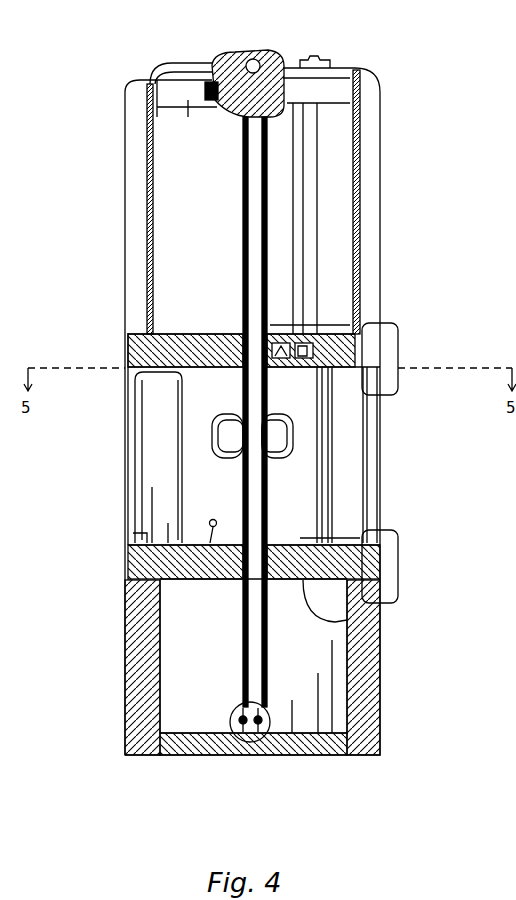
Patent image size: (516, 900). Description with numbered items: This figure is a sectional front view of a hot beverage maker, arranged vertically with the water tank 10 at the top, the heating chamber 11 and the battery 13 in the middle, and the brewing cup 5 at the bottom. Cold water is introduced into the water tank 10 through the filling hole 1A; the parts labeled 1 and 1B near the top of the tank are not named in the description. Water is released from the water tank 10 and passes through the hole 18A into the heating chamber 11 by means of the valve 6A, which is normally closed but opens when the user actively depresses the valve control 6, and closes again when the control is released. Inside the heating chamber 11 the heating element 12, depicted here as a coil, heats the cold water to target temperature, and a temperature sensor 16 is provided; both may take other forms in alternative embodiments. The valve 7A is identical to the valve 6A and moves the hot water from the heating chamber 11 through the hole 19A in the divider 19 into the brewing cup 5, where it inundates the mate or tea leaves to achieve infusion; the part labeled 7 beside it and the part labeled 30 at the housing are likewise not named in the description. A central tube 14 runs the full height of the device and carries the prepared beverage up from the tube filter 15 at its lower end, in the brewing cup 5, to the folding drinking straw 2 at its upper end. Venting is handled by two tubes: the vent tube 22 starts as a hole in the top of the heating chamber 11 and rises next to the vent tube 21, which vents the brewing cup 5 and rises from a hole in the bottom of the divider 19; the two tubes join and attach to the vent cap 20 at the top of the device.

The cap 1 is at (188, 63).
The filling hole 1A is at (190, 117).
The cap lower portion 1B is at (170, 330).
The folding drinking straw 2 is at (270, 53).
The brewing cup 5 is at (252, 667).
The valve control 6 is at (393, 345).
The valve 6A is at (372, 417).
The lower side fitting 7 is at (390, 548).
The valve 7A is at (347, 622).
The water tank 10 is at (183, 193).
The heating chamber 11 is at (254, 480).
The heating element 12 is at (300, 430).
The battery 13 is at (160, 468).
The central tube 14 is at (257, 193).
The tube filter 15 is at (270, 717).
The temperature sensor 16 is at (128, 585).
The hole 18A is at (308, 335).
The divider 19 is at (125, 560).
The hole 19A is at (303, 535).
The vent cap 20 is at (327, 62).
The vent tube 21 is at (300, 133).
The vent tube 22 is at (307, 170).
The housing 30 is at (385, 105).